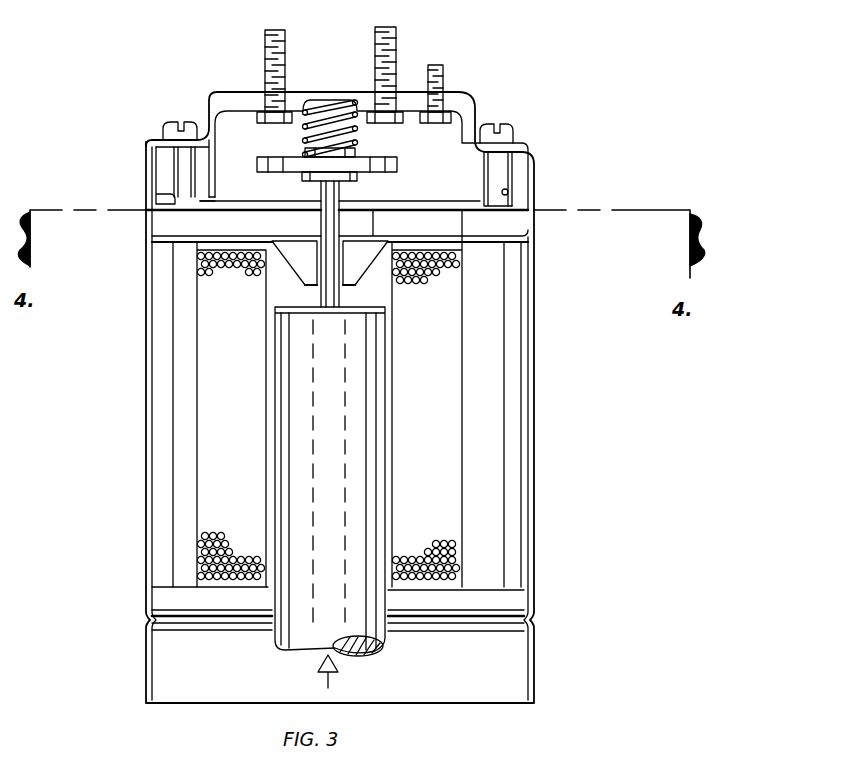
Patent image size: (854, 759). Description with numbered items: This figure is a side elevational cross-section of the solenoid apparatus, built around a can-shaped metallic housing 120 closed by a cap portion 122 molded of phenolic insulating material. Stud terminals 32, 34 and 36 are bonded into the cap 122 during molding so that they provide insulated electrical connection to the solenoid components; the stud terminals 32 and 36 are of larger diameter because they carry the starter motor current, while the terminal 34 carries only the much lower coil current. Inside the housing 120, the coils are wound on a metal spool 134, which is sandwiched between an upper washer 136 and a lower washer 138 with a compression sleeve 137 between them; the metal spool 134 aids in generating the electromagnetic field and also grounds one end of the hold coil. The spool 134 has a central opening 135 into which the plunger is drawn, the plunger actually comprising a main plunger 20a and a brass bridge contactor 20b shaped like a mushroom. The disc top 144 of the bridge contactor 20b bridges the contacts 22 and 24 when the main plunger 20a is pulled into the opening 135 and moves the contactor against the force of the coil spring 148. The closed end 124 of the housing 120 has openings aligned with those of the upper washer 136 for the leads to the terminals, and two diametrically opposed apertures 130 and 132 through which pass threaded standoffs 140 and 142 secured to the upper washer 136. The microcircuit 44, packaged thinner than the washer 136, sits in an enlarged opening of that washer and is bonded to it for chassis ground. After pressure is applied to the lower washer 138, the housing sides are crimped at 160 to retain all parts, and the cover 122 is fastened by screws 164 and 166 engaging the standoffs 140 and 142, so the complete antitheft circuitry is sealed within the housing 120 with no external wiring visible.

The housing 120 is at (545, 411).
The cap portion 122 is at (558, 147).
The contact 22 is at (216, 92).
The contact 24 is at (380, 128).
The stud terminal 32 is at (265, 47).
The stud terminal 34 is at (443, 73).
The stud terminal 36 is at (396, 34).
The coil spring 148 is at (328, 108).
The disc top 144 is at (397, 167).
The main plunger 20a is at (338, 417).
The bridge contactor 20b is at (321, 195).
The upper washer 136 is at (175, 221).
The microcircuit 44 is at (463, 220).
The compression sleeve 137 is at (175, 360).
The central opening 135 is at (387, 290).
The spool 134 is at (395, 479).
The lower washer 138 is at (183, 585).
The crimp 160 is at (146, 620).
The screw 164 is at (173, 122).
The screw 166 is at (513, 129).
The threaded standoff 140 is at (177, 167).
The closed end 124 is at (208, 198).
The aperture 130 is at (172, 198).
The threaded standoff 142 is at (503, 175).
The aperture 132 is at (508, 191).